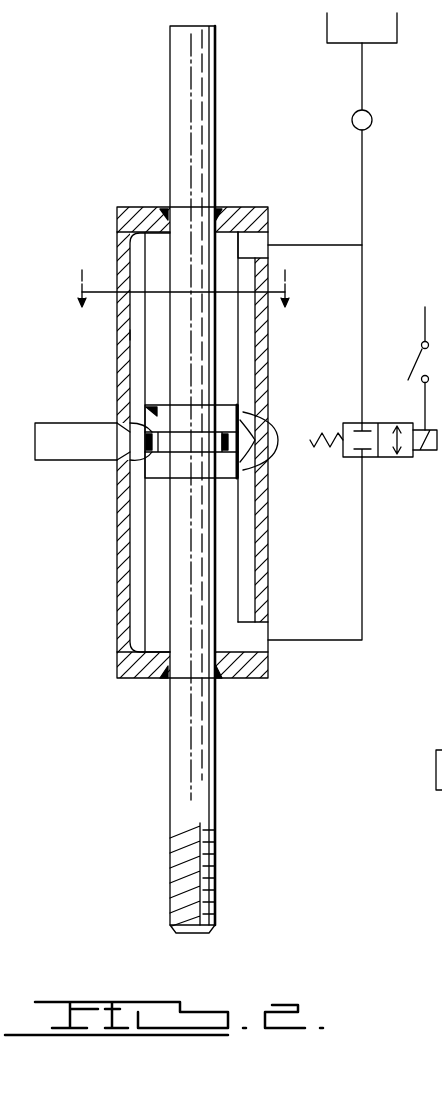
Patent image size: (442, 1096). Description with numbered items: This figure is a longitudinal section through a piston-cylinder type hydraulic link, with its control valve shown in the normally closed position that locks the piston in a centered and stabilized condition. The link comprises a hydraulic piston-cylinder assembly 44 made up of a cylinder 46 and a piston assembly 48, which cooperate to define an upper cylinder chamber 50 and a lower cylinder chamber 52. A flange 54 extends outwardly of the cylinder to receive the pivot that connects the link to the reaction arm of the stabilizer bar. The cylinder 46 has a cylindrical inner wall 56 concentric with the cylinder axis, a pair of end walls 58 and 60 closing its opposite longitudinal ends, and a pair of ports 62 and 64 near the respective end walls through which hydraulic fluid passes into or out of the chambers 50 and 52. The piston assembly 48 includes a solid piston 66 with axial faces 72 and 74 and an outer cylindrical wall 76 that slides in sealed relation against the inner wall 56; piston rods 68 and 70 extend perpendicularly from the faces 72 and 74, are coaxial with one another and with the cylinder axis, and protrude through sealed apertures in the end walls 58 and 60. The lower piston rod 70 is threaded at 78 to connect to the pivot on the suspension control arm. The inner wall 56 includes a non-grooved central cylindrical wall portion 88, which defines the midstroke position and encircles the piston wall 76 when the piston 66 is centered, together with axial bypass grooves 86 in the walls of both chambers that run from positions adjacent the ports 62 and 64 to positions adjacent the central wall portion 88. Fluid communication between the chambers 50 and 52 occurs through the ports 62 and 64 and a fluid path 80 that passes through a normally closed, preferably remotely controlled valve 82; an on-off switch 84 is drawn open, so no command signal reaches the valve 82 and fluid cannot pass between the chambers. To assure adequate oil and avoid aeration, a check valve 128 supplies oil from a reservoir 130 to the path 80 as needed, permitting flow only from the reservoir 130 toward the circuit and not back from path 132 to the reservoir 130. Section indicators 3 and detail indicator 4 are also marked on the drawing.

The hydraulic piston-cylinder assembly 44 is at (263, 732).
The cylinder 46 is at (151, 442).
The piston assembly 48 is at (168, 751).
The cylinder chamber 50 is at (148, 250).
The cylinder chamber 52 is at (150, 618).
The flange 54 is at (50, 446).
The cylindrical inner wall 56 is at (150, 588).
The end wall 58 is at (160, 212).
The end wall 60 is at (140, 672).
The port 62 is at (256, 242).
The port 64 is at (258, 646).
The solid piston 66 is at (160, 497).
The piston rod 68 is at (170, 111).
The piston rod 70 is at (170, 795).
The axial face 72 is at (158, 408).
The axial face 74 is at (188, 490).
The outer cylindrical wall 76 is at (146, 426).
The threaded portion 78 is at (176, 884).
The fluid path 80 is at (362, 568).
The valve 82 is at (386, 457).
The on-off switch 84 is at (412, 366).
The axial bypass grooves 86 is at (132, 330).
The central cylindrical wall portion 88 is at (148, 478).
The check valve 128 is at (352, 118).
The reservoir 130 is at (327, 28).
The path 132 is at (362, 141).
The section line 3- 3 is at (176, 296).
The detail area of FIG. 4 is at (277, 452).